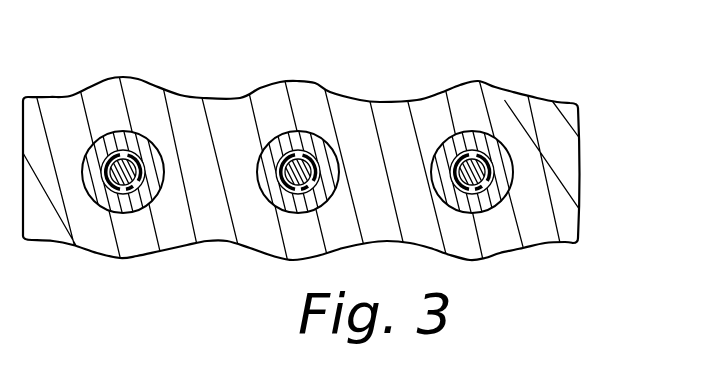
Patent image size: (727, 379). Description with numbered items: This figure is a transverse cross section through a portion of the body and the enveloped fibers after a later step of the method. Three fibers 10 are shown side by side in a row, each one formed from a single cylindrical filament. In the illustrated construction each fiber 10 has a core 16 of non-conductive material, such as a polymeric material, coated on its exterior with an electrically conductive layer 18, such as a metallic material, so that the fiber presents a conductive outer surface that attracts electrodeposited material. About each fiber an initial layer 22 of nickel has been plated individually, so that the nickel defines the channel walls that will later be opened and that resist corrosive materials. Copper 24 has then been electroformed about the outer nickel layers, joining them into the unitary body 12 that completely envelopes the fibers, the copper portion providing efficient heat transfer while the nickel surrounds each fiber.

The fiber 10 is at (440, 137).
The body 12 is at (280, 83).
The core 16 is at (135, 143).
The electrically conductive layer 18 is at (128, 142).
The initial layer 22 is at (103, 138).
The copper 24 is at (558, 215).